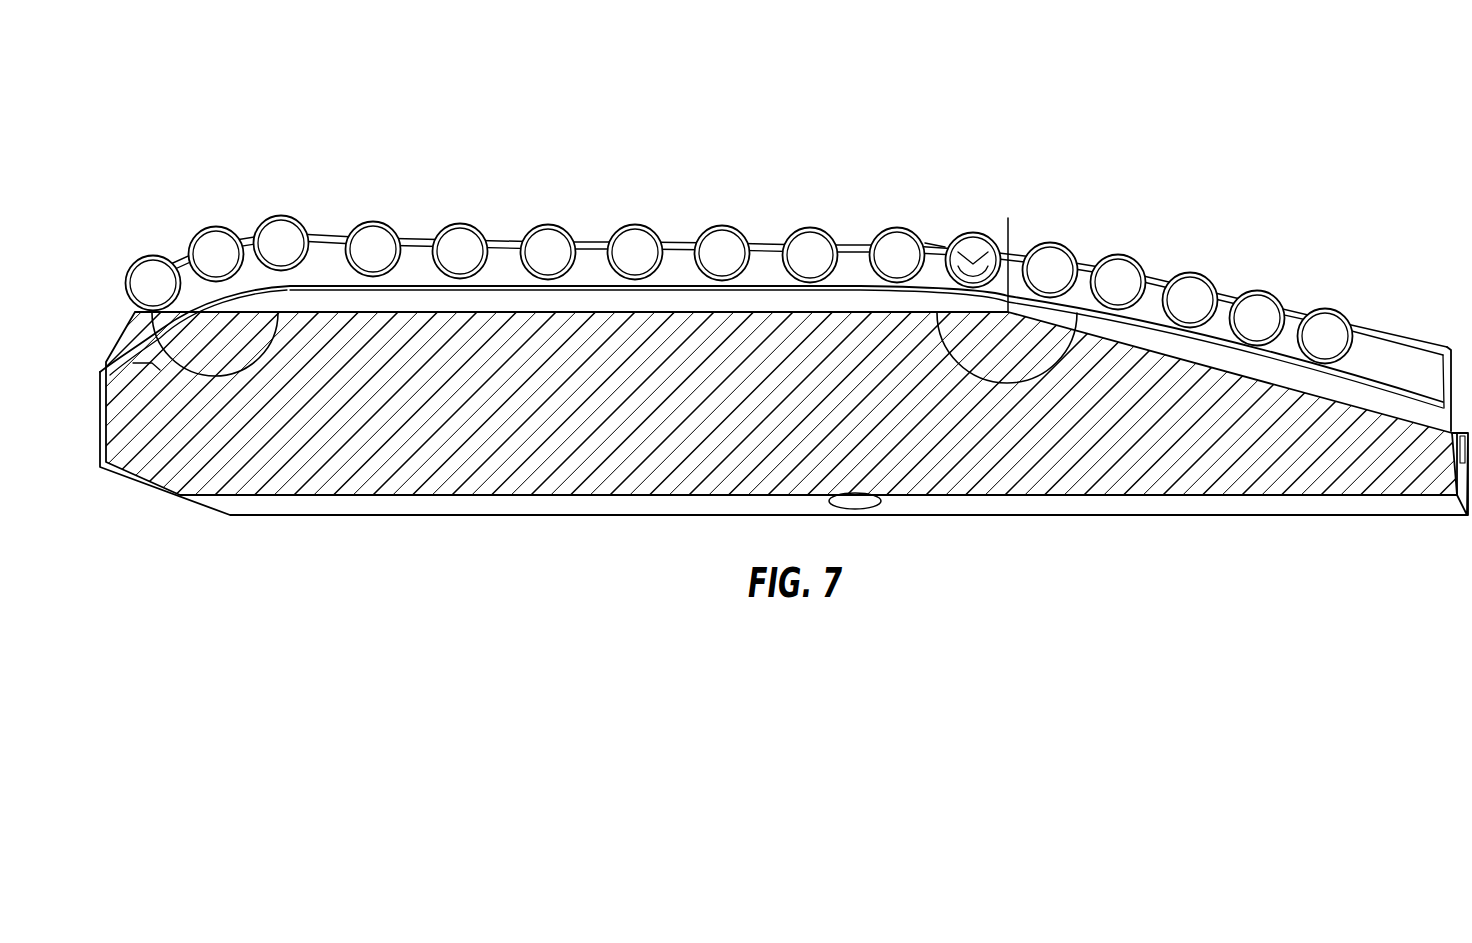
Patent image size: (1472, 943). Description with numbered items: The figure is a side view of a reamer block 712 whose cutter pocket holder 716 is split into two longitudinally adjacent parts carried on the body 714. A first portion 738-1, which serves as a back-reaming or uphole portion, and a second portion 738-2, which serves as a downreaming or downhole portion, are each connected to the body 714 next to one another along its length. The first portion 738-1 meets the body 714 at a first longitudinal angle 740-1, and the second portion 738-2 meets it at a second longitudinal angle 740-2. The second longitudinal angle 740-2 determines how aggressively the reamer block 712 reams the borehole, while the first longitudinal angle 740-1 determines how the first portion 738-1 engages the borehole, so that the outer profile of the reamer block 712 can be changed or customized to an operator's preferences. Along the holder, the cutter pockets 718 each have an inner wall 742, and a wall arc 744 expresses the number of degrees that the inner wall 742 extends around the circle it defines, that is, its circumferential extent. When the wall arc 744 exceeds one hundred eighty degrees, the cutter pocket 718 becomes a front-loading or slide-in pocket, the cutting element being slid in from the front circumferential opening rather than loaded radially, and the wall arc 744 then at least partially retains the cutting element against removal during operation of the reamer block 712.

The reamer block 712 is at (1381, 98).
The body 714 is at (1351, 479).
The cutter pocket holder 716 is at (1389, 291).
The cutter pocket 718 is at (938, 240).
The first portion 738-1 is at (323, 251).
The second portion 738-2 is at (1153, 287).
The first longitudinal angle 740-1 is at (223, 377).
The second longitudinal angle 740-2 is at (1007, 385).
The inner wall 742 is at (865, 260).
The wall arc 744 is at (1008, 220).